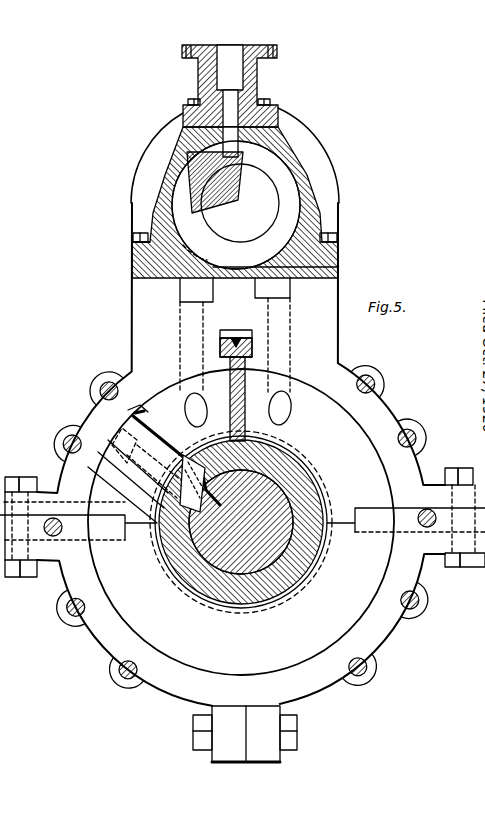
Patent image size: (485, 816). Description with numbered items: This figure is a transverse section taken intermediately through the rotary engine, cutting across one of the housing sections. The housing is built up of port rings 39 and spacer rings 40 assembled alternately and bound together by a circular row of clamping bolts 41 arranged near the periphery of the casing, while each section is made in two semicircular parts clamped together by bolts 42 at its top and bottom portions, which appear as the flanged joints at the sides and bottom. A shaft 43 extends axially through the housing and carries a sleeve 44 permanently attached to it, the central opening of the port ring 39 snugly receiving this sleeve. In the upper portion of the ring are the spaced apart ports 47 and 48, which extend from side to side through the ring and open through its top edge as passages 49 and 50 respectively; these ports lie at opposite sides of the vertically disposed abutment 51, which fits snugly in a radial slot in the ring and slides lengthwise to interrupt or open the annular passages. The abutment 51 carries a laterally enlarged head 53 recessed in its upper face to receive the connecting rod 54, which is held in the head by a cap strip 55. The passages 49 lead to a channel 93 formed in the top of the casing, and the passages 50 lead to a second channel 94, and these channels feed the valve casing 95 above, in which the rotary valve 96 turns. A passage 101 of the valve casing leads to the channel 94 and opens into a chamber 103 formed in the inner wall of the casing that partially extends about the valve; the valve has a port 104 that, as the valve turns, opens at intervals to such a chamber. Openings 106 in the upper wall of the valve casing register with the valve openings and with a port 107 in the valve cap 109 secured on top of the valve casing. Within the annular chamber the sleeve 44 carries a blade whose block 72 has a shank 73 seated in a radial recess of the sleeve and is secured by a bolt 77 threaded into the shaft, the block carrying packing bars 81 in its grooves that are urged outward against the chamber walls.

The port ring 39 is at (337, 427).
The spacer ring 40 is at (415, 466).
The clamping bolt 41 is at (70, 440).
The bolt 42 is at (457, 469).
The shaft 43 is at (293, 560).
The sleeve 44 is at (298, 480).
The port 47 is at (192, 400).
The port 48 is at (283, 407).
The passage 49 is at (192, 382).
The passage 50 is at (287, 368).
The abutment 51 is at (242, 397).
The head 53 is at (252, 345).
The connecting rod 54 is at (234, 341).
The cap strip 55 is at (239, 340).
The block 72 is at (135, 460).
The shank 73 is at (158, 527).
The bolt 77 is at (176, 458).
The packing bar 81 is at (146, 410).
The channel 93 is at (192, 292).
The channel 94 is at (282, 288).
The valve casing 95 is at (286, 155).
The rotary valve 96 is at (183, 162).
The passage 101 is at (190, 262).
The chamber 103 is at (284, 213).
The port 104 is at (240, 203).
The opening 106 is at (232, 146).
The port 107 is at (229, 103).
The valve cap 109 is at (198, 77).